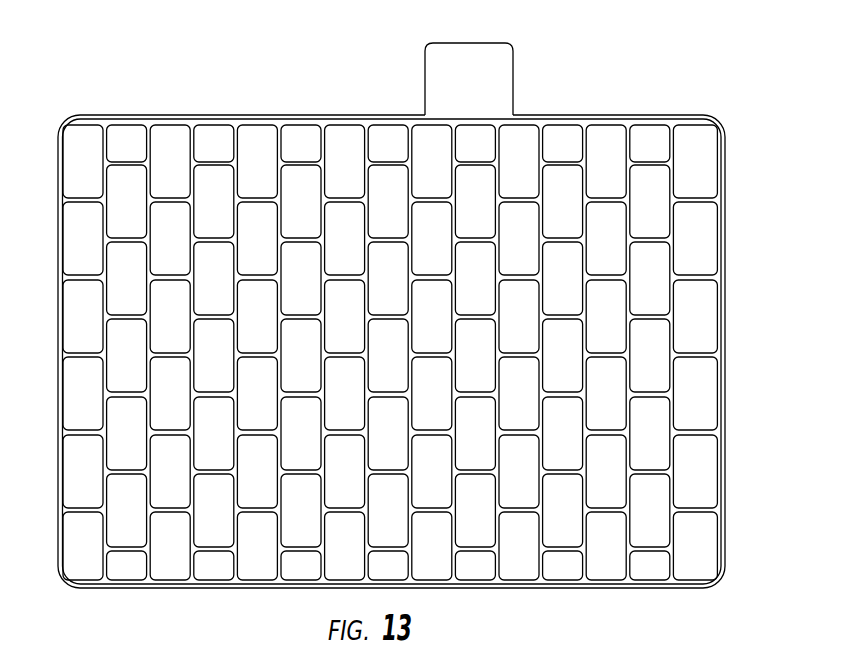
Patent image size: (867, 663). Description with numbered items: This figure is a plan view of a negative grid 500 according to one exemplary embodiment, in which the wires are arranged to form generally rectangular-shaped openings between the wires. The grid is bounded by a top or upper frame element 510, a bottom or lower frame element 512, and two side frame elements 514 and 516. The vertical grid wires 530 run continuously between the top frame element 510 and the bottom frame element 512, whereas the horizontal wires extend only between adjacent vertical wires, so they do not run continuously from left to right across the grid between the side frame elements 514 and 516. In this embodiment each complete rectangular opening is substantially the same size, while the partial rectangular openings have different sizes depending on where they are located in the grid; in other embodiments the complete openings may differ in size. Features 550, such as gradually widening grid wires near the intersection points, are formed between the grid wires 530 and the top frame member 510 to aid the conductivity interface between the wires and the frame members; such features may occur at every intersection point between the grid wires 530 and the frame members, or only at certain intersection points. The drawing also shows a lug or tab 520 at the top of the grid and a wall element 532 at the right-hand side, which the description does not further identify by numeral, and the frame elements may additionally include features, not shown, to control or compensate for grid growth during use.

The grid 500 is at (663, 45).
The top frame element 510 is at (303, 118).
The bottom frame element 512 is at (457, 588).
The side frame element 514 is at (58, 480).
The side frame element 516 is at (725, 393).
The tab 520 is at (497, 77).
The grid wires 530 is at (690, 433).
The cell wall 532 is at (676, 282).
The features 550 is at (628, 125).